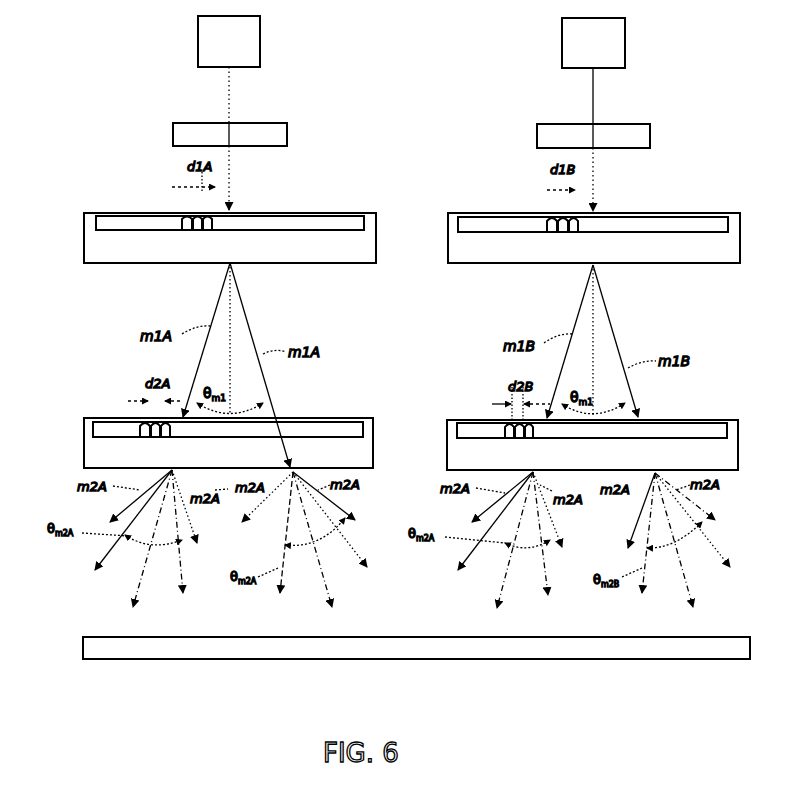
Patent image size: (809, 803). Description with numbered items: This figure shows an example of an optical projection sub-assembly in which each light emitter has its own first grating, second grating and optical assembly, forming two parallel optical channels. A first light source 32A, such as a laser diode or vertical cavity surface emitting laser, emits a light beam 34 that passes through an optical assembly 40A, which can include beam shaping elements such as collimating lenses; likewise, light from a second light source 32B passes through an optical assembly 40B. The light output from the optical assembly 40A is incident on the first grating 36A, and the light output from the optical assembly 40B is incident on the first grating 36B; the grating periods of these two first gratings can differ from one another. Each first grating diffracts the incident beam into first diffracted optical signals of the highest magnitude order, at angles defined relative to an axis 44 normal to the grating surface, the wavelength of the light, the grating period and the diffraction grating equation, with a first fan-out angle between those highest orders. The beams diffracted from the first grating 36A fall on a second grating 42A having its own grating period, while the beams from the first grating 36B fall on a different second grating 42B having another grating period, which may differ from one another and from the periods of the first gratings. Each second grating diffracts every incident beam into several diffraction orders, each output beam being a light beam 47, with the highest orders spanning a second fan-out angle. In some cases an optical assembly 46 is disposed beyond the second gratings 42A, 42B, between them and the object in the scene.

The first light source 32A is at (260, 33).
The second light source 32B is at (625, 34).
The light beam 34 is at (232, 98).
The optical assembly 40A is at (287, 135).
The optical assembly 40B is at (650, 136).
The first grating 36A is at (376, 236).
The first grating 36B is at (740, 236).
The axis 44 is at (233, 320).
The second grating 42A is at (373, 448).
The second grating 42B is at (738, 450).
The light beam diffracted from second grating 47 is at (110, 508).
The optical assembly 46 is at (752, 641).